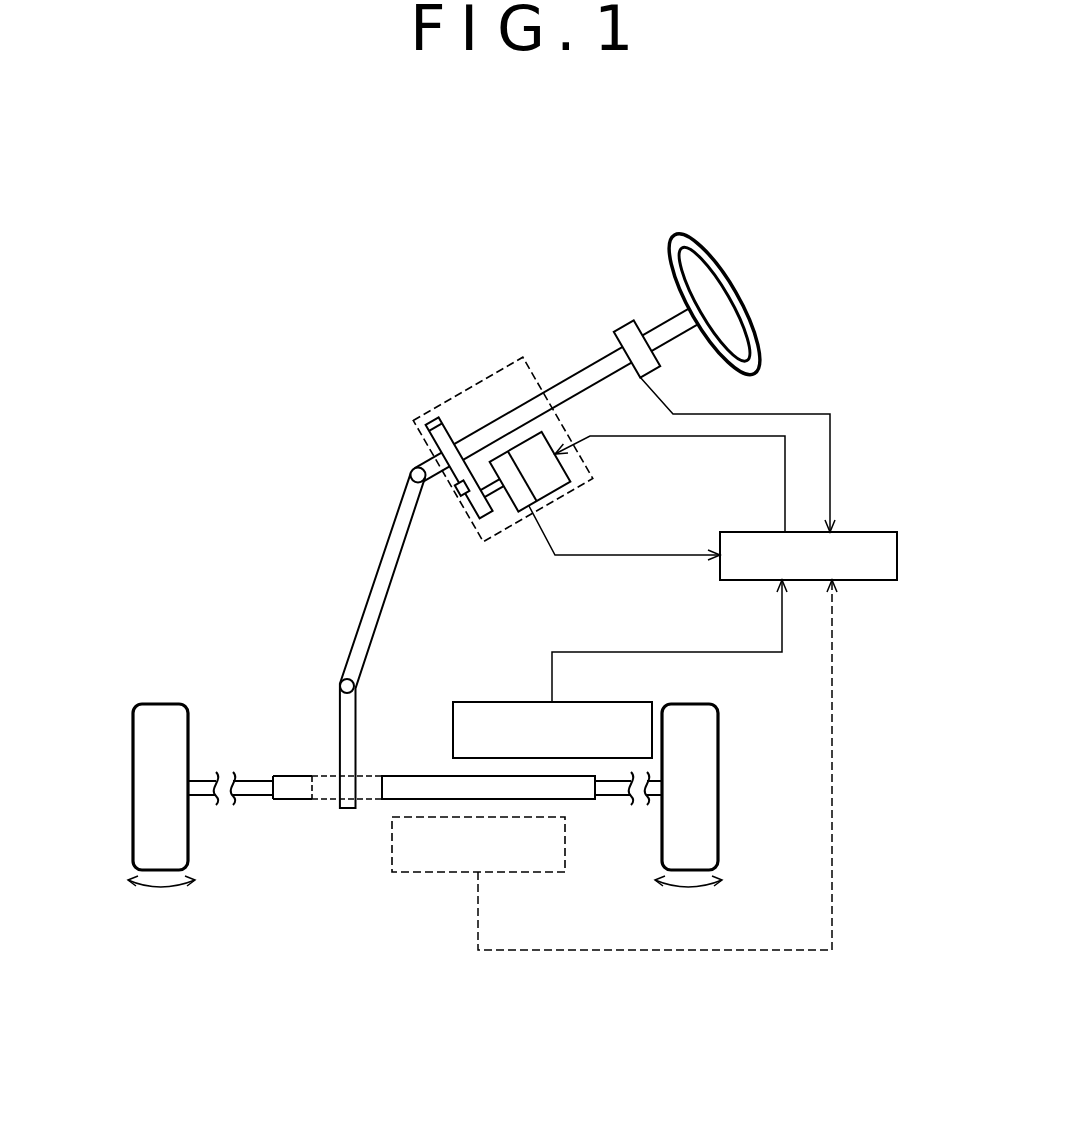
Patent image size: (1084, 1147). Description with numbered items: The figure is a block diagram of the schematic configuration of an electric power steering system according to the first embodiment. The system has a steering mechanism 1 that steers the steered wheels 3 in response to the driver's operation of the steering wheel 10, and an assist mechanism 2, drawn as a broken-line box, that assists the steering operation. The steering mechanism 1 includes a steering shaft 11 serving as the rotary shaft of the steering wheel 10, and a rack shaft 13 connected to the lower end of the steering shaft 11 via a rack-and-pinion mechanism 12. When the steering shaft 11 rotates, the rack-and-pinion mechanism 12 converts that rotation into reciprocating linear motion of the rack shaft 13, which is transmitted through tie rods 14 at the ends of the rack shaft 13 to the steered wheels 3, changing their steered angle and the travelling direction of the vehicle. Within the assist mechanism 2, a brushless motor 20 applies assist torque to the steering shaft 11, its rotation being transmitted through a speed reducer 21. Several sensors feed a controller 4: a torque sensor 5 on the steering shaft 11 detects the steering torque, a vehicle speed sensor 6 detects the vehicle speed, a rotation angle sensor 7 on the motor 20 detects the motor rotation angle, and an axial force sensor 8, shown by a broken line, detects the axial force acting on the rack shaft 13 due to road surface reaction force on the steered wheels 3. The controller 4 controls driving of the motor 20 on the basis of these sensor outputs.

The steering mechanism 1 is at (352, 512).
The assist mechanism 2 is at (473, 385).
The steered wheels 3 is at (160, 704).
The controller 4 is at (866, 532).
The torque sensor 5 is at (630, 322).
The vehicle speed sensor 6 is at (512, 702).
The rotation angle sensor 7 is at (511, 500).
The axial force sensor 8 is at (392, 850).
The steering wheel 10 is at (745, 305).
The steering shaft 11 is at (580, 373).
The rack-and-pinion mechanism 12 is at (387, 788).
The rack shaft 13 is at (437, 776).
The tie rods 14 is at (255, 797).
The motor 20 is at (580, 466).
The speed reducer 21 is at (452, 480).